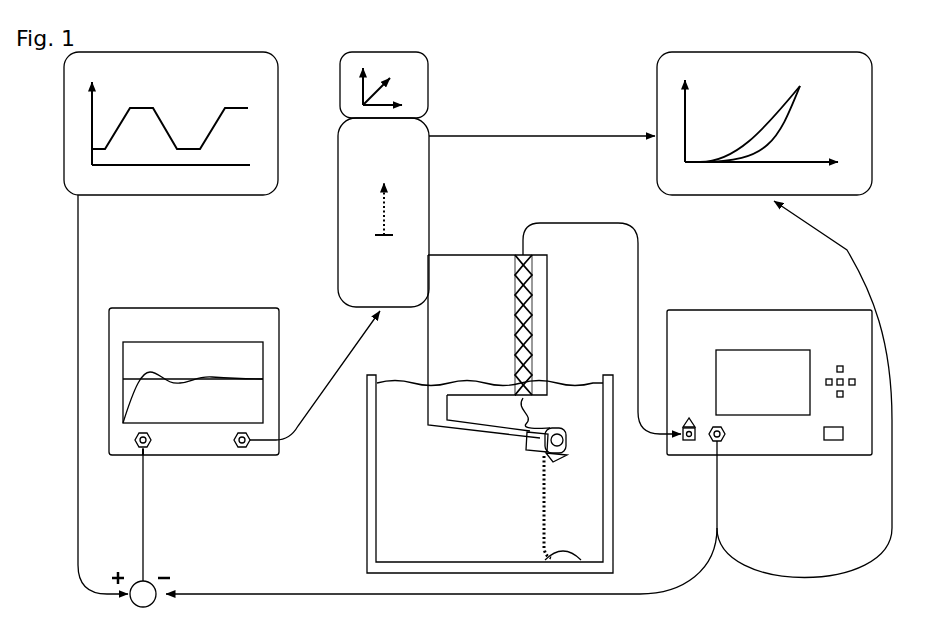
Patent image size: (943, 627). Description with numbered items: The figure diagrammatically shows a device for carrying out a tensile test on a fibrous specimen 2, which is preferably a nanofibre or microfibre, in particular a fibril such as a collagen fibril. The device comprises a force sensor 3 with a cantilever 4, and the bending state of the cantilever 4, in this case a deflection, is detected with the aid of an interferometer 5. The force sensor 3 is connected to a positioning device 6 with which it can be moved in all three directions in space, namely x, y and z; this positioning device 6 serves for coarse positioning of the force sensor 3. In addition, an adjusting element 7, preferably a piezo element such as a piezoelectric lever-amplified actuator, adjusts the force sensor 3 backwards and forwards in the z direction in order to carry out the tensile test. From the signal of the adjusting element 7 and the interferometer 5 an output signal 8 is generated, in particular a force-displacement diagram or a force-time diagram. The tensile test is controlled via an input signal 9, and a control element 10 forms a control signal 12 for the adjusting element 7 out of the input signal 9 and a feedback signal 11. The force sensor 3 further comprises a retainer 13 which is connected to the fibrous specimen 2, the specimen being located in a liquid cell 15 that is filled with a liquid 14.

The fibrous specimen 2 is at (535, 501).
The force sensor 3 is at (487, 325).
The cantilever 4 is at (476, 439).
The interferometer 5 is at (769, 382).
The positioning device 6 is at (432, 83).
The adjusting element 7 is at (383, 212).
The output signal 8 is at (764, 123).
The input signal 9 is at (171, 123).
The control element 10 is at (194, 381).
The feedback signal 11 is at (262, 588).
The control signal 12 is at (326, 368).
The retainer 13 is at (558, 461).
The liquid 14 is at (408, 522).
The liquid cell 15 is at (620, 512).